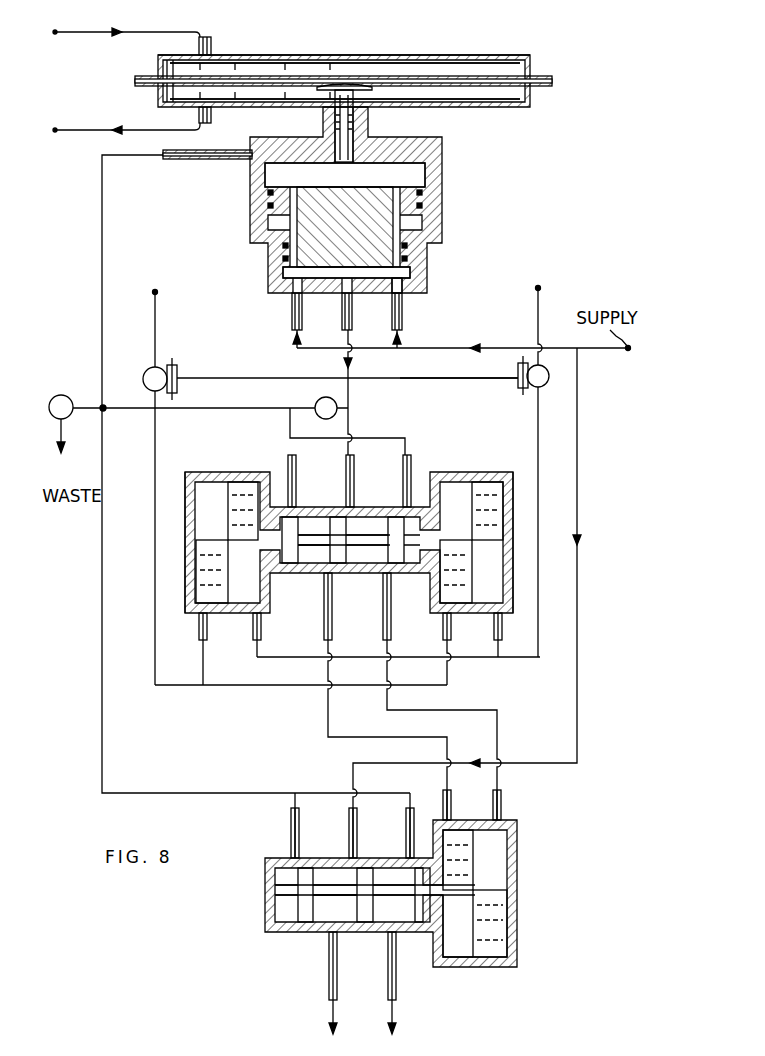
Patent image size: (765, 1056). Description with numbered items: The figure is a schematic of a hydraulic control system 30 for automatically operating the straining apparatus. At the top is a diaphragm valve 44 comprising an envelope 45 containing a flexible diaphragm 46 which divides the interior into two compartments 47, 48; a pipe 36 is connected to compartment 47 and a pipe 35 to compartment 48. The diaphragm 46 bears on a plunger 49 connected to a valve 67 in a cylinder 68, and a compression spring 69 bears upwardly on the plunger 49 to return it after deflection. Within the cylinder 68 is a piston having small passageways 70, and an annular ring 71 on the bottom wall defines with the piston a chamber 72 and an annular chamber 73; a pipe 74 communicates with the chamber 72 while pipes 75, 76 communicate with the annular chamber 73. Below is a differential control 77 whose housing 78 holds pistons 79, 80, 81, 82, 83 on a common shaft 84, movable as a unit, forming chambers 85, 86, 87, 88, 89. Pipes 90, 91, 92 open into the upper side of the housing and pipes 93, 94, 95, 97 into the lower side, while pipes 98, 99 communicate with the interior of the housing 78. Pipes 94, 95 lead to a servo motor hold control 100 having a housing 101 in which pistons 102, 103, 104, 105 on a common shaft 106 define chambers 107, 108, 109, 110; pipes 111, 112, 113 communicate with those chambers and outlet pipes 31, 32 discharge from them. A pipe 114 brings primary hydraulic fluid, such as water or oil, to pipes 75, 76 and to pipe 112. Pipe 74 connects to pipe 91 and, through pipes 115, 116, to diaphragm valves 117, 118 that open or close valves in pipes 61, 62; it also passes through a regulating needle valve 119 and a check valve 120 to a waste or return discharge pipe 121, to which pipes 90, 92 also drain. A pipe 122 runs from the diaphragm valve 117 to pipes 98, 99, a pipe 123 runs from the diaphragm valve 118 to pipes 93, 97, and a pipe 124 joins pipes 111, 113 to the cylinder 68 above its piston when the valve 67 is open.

The hydraulic control system 30 is at (580, 214).
The outlet pipe 31 is at (395, 981).
The outlet pipe 32 is at (329, 991).
The pipe 35 is at (100, 128).
The pipe 36 is at (112, 32).
The diaphragm valve 44 is at (327, 47).
The envelope 45 is at (396, 57).
The flexible diaphragm 46 is at (431, 77).
The compartment 47 is at (477, 66).
The compartment 48 is at (488, 92).
The plunger 49 is at (346, 84).
The pipe 61 is at (156, 312).
The pipe 62 is at (537, 311).
The valve 67 is at (423, 172).
The cylinder 68 is at (432, 186).
The compression spring / piston 69 is at (358, 118).
The small passageways 70 is at (396, 200).
The annular ring 71 is at (384, 280).
The chamber 72 is at (343, 284).
The annular chamber 73 is at (292, 272).
The pipe 74 is at (355, 327).
The pipe 75 is at (410, 318).
The pipe 76 is at (291, 320).
The differential control 77 is at (242, 451).
The housing 78 is at (194, 540).
The piston 79 is at (455, 490).
The piston 80 is at (398, 528).
The piston 81 is at (338, 528).
The piston 82 is at (282, 516).
The piston 83 is at (210, 486).
The common shaft 84 is at (312, 548).
The chamber 85 is at (500, 536).
The chamber 86 is at (418, 556).
The chamber 87 is at (368, 556).
The chamber 88 is at (318, 556).
The chamber 89 is at (244, 596).
The pipe 90 is at (297, 471).
The pipe 91 is at (355, 471).
The pipe 92 is at (408, 455).
The pipe 93 is at (262, 630).
The pipe 94 is at (333, 632).
The pipe 95 is at (392, 632).
The pipe 97 is at (503, 632).
The pipe 98 is at (199, 632).
The pipe 99 is at (452, 632).
The servo motor hold control 100 is at (564, 827).
The housing 101 is at (518, 888).
The piston 102 is at (493, 925).
The piston 103 is at (424, 906).
The piston 104 is at (366, 906).
The piston 105 is at (306, 909).
The common shaft 106 is at (333, 875).
The chamber 107 is at (280, 897).
The chamber 108 is at (330, 913).
The chamber 109 is at (394, 880).
The chamber 110 is at (456, 952).
The pipe 111 is at (290, 815).
The pipe 112 is at (578, 438).
The pipe 113 is at (405, 815).
The pipe 114 is at (578, 350).
The pipe 115 is at (231, 376).
The pipe 116 is at (452, 379).
The diaphragm valve 117 is at (179, 372).
The diaphragm valve 118 is at (518, 386).
The regulating needle valve 119 is at (314, 401).
The check valve 120 is at (61, 394).
The waste or return discharge pipe 121 is at (66, 430).
The pipe 122 is at (153, 508).
The pipe 123 is at (537, 428).
The pipe 124 is at (104, 238).